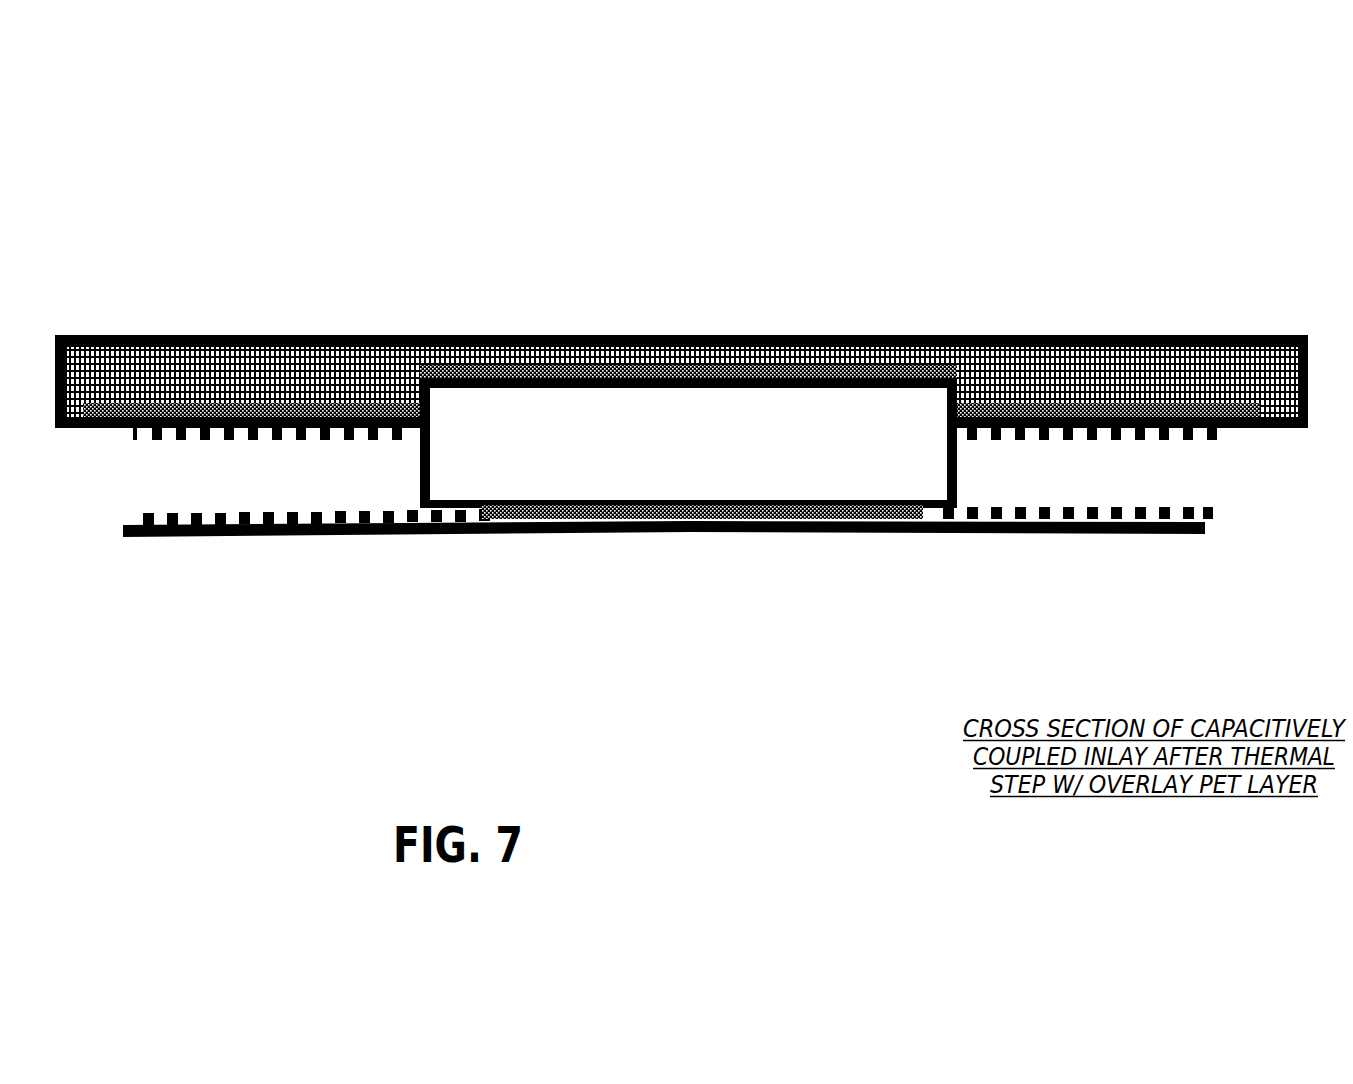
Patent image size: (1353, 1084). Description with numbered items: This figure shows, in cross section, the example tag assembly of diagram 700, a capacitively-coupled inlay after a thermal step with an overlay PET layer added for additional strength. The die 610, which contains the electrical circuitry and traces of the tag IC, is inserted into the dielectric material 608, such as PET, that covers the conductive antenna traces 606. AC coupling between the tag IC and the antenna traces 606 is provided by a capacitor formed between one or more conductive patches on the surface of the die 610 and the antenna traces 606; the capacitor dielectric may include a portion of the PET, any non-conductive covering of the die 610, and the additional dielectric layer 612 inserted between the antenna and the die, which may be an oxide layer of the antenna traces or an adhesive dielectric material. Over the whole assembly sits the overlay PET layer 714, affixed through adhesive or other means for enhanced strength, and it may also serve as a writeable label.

The diagram 700 is at (147, 118).
The die 610 is at (583, 413).
The additional dielectric layer 612 is at (782, 504).
The overlay PET layer 714 is at (1023, 361).
The antenna traces 606 is at (158, 537).
The dielectric material 608 is at (1232, 486).